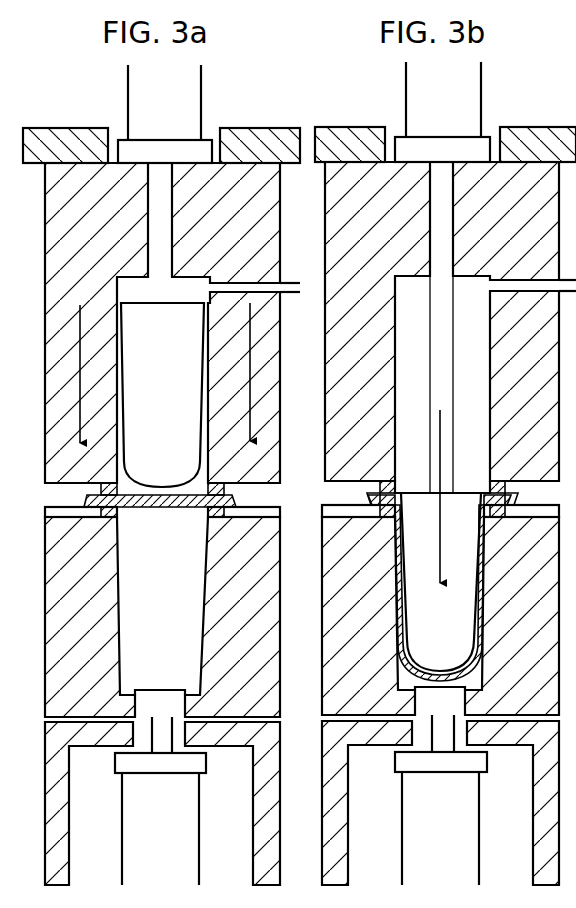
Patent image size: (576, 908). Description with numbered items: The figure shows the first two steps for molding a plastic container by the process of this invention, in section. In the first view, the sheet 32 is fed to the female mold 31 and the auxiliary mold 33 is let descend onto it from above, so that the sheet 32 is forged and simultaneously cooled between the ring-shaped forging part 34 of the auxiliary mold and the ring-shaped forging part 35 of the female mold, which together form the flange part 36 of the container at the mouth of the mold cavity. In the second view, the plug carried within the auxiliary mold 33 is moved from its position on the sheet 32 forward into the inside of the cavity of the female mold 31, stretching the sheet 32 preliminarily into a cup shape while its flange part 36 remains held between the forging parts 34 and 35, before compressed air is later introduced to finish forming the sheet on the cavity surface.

The female mold 31 is at (270, 595).
The sheet 32 is at (157, 506).
The auxiliary mold 33 is at (272, 372).
The forging part of the auxiliary mold 34 is at (224, 490).
The forging part of the female mold 35 is at (218, 517).
The flange part of container 36 is at (100, 497).